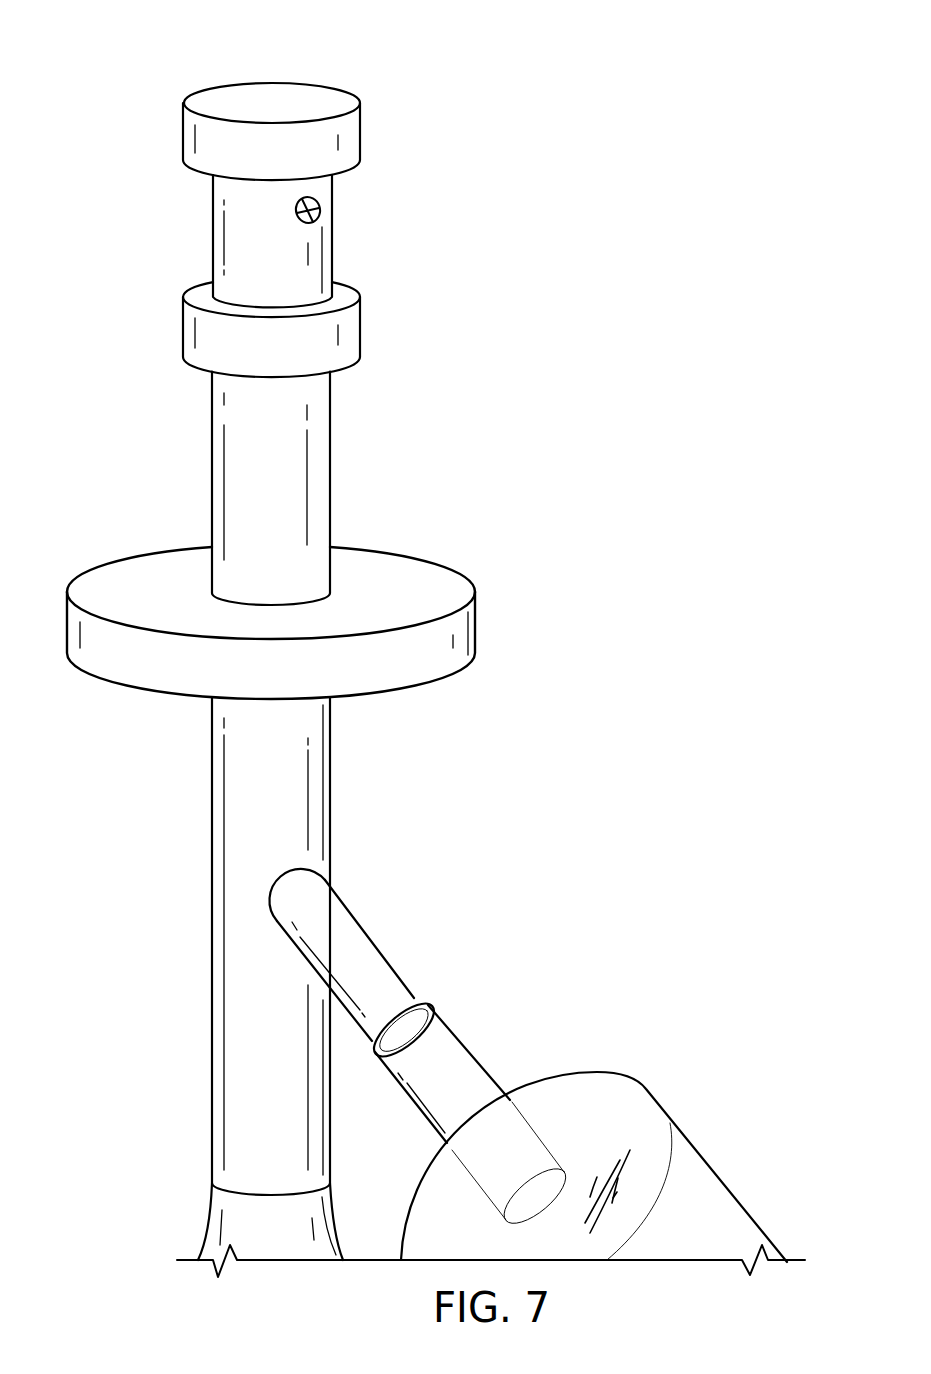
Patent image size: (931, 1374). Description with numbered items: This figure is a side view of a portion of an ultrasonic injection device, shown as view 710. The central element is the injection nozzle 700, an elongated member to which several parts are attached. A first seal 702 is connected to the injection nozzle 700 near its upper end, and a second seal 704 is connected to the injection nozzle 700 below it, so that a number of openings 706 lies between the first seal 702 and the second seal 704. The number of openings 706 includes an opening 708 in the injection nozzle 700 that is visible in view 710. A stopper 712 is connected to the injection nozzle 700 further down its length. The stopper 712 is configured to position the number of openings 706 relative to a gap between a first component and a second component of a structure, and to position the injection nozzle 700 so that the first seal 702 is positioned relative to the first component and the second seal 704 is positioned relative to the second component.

The injection nozzle 700 is at (333, 425).
The first seal 702 is at (183, 132).
The second seal 704 is at (183, 327).
The number of openings 706 is at (297, 229).
The opening 708 is at (320, 214).
The view 710 is at (566, 74).
The stopper 712 is at (475, 618).